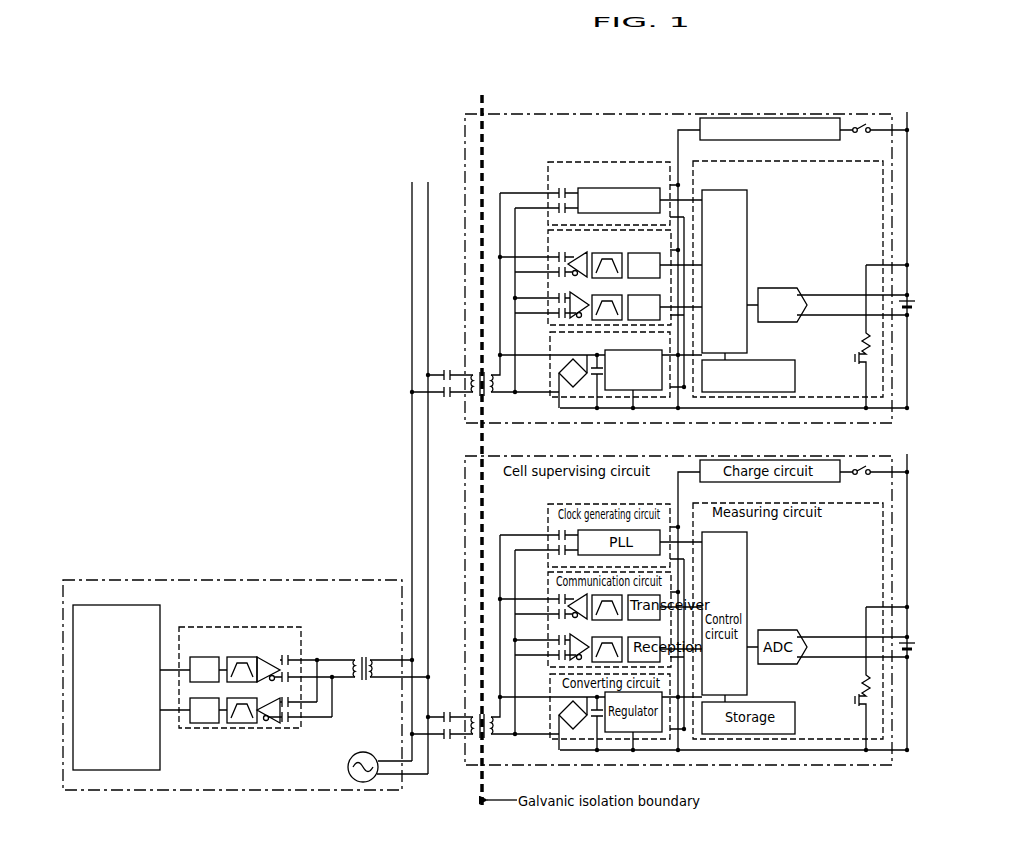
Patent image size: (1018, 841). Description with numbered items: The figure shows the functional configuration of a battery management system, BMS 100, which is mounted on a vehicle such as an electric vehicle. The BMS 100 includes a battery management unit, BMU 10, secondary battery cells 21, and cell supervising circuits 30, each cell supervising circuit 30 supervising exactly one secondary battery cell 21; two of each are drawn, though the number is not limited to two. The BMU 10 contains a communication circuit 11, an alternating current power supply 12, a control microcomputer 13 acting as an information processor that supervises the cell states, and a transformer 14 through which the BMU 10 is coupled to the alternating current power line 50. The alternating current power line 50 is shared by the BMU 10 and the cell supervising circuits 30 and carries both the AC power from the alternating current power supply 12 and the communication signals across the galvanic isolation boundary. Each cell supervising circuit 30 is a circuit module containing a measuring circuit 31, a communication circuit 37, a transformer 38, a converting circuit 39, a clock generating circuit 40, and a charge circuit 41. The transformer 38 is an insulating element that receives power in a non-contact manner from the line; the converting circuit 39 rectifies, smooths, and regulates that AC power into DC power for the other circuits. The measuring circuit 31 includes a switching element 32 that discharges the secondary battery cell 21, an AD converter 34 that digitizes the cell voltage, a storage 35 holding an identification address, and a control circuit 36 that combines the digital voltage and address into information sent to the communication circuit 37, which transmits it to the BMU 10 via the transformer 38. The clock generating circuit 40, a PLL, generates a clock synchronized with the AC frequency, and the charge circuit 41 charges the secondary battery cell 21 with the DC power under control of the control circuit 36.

The BMS 100 is at (969, 127).
The battery management unit (BMU) 10 is at (329, 580).
The communication circuit 11 is at (214, 628).
The alternating current power supply 12 is at (364, 752).
The control microcomputer 13 is at (118, 605).
The transformer 14 is at (361, 654).
The secondary battery cell 21 is at (913, 306).
The cell supervising circuit 30 is at (538, 116).
The measuring circuit 31 is at (731, 162).
The switching element 32 is at (853, 353).
The AD converter 34 is at (781, 288).
The storage 35 is at (758, 360).
The control circuit 36 is at (747, 195).
The communication circuit 37 is at (548, 247).
The transformer 38 is at (491, 398).
The converting circuit 39 is at (548, 346).
The clock generating circuit 40 is at (546, 176).
The charge circuit 41 is at (806, 118).
The alternating current power line 50 is at (428, 436).